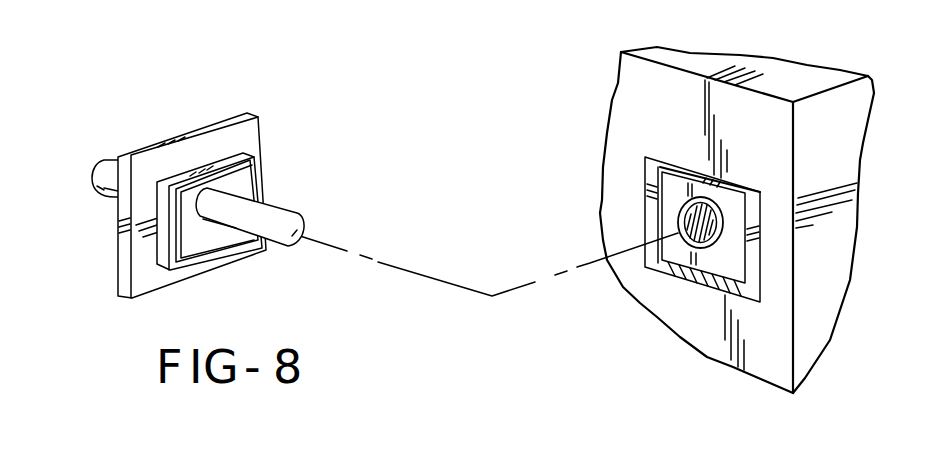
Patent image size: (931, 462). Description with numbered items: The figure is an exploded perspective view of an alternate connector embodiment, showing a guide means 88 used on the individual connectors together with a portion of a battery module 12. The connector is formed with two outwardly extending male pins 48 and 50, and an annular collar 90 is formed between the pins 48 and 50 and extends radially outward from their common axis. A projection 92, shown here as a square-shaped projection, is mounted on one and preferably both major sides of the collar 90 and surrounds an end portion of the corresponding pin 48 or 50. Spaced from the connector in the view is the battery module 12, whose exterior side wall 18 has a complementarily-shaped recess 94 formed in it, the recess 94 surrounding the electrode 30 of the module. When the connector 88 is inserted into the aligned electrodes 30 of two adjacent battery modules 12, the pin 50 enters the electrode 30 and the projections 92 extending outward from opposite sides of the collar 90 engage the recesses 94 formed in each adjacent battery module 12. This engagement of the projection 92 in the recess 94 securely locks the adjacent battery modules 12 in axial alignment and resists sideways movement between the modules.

The battery module 12 is at (768, 78).
The side wall 18 is at (617, 140).
The electrode 30 is at (707, 249).
The male pin 48 is at (98, 166).
The male pin 50 is at (296, 215).
The guide means 88 is at (193, 68).
The annular collar 90 is at (238, 114).
The projection 92 is at (264, 152).
The recess 94 is at (648, 210).